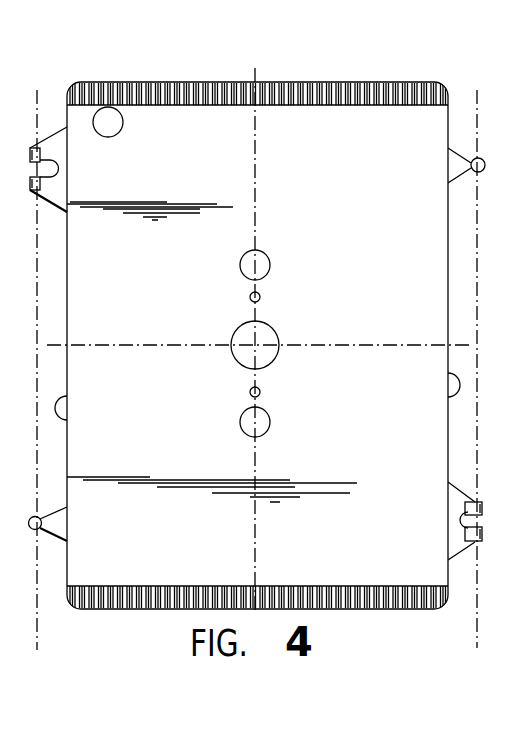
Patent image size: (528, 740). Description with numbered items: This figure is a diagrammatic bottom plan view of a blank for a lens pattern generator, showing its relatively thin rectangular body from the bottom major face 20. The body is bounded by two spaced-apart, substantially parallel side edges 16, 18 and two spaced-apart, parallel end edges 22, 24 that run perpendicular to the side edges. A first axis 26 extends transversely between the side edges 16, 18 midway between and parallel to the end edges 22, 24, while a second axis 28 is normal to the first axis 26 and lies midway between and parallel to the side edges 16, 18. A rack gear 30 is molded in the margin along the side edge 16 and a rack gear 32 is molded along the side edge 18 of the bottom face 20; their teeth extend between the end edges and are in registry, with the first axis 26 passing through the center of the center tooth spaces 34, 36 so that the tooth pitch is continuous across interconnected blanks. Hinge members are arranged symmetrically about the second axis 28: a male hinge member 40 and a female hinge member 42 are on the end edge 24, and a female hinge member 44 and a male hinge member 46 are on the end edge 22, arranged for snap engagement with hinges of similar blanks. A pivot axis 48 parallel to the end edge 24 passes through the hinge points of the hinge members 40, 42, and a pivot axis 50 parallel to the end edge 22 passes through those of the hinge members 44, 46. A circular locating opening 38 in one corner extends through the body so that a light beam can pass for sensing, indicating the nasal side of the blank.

The side edge 16 is at (175, 82).
The side edge 18 is at (133, 608).
The bottom major face 20 is at (388, 254).
The end edge 22 is at (448, 374).
The end edge 24 is at (68, 396).
The first axis 26 is at (258, 138).
The second axis 28 is at (188, 345).
The rack gear 30 is at (436, 79).
The rack gear 32 is at (387, 609).
The center tooth space 34 is at (264, 83).
The center tooth space 36 is at (258, 612).
The locating opening 38 is at (98, 117).
The male hinge member 40 is at (43, 535).
The female hinge member 42 is at (52, 209).
The female hinge member 44 is at (466, 485).
The male hinge member 46 is at (483, 162).
The pivot axis 48 is at (38, 604).
The pivot axis 50 is at (477, 594).